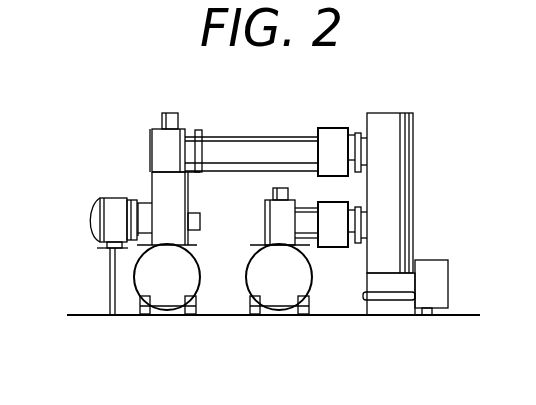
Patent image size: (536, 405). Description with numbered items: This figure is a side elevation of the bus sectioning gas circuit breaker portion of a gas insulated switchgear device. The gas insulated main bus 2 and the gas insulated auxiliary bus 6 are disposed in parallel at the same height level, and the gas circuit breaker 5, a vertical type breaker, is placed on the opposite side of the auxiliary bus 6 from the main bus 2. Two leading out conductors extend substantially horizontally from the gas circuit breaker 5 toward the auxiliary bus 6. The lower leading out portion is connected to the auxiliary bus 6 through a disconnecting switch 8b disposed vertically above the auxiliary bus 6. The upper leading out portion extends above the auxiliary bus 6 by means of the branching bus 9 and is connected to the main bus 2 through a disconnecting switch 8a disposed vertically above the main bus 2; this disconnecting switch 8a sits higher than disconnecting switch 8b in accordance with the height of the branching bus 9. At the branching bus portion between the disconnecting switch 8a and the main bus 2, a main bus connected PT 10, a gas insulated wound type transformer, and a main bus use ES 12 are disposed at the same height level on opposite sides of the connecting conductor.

The gas insulated main bus 2 is at (165, 300).
The gas circuit breaker 5 is at (403, 170).
The gas insulated auxiliary bus 6 is at (281, 300).
The disconnecting switch 8a is at (178, 113).
The disconnecting switch 8b is at (287, 188).
The gas insulated branching bus 9 is at (262, 140).
The main bus connected PT 10 is at (110, 203).
The main bus use ES 12 is at (200, 222).